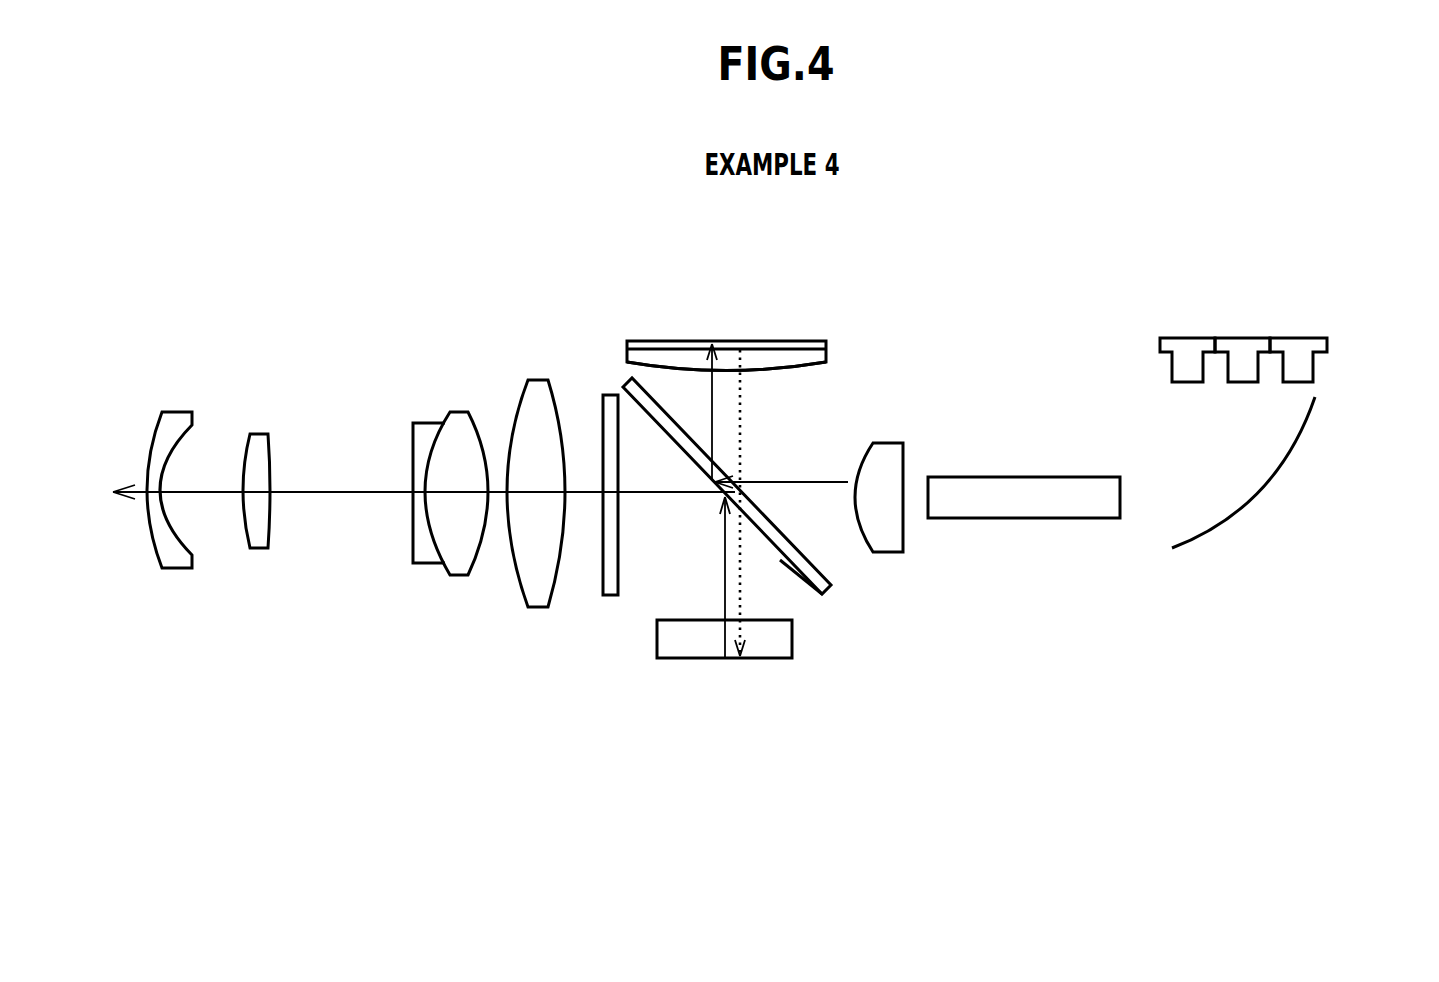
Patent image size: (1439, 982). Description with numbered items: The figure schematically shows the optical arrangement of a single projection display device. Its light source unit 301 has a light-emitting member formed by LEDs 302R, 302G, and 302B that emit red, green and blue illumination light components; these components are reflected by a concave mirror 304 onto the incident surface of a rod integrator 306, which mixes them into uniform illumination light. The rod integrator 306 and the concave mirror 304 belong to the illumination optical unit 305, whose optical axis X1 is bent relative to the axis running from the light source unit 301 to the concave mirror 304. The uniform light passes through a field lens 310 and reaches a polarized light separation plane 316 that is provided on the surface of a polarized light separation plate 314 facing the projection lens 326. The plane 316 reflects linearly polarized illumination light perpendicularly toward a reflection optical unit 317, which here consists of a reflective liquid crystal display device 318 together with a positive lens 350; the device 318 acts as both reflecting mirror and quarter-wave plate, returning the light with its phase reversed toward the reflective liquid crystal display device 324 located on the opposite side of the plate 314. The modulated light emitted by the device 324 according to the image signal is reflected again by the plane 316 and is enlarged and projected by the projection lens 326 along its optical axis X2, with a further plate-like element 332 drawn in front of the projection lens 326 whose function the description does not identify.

The light source unit 301 is at (1272, 412).
The LED 302B is at (1180, 345).
The LED 302G is at (1243, 345).
The LED 302R is at (1297, 345).
The concave mirror 304 is at (1198, 532).
The illumination optical unit 305 is at (1002, 594).
The rod integrator 306 is at (1025, 487).
The field lens 310 is at (893, 535).
The polarized light separation plate 314 is at (808, 568).
The polarized light separation plane 316 is at (790, 572).
The reflection optical unit 317 is at (622, 333).
The reflective liquid crystal display device 318 is at (688, 342).
The reflective liquid crystal display device 324 is at (663, 637).
The projection lens 326 is at (567, 340).
The parallel plate / filter 332 is at (607, 585).
The positive lens 350 is at (787, 360).
The optical axis of the illumination optical unit X1 is at (813, 485).
The optical axis of the projection lens X2 is at (335, 496).